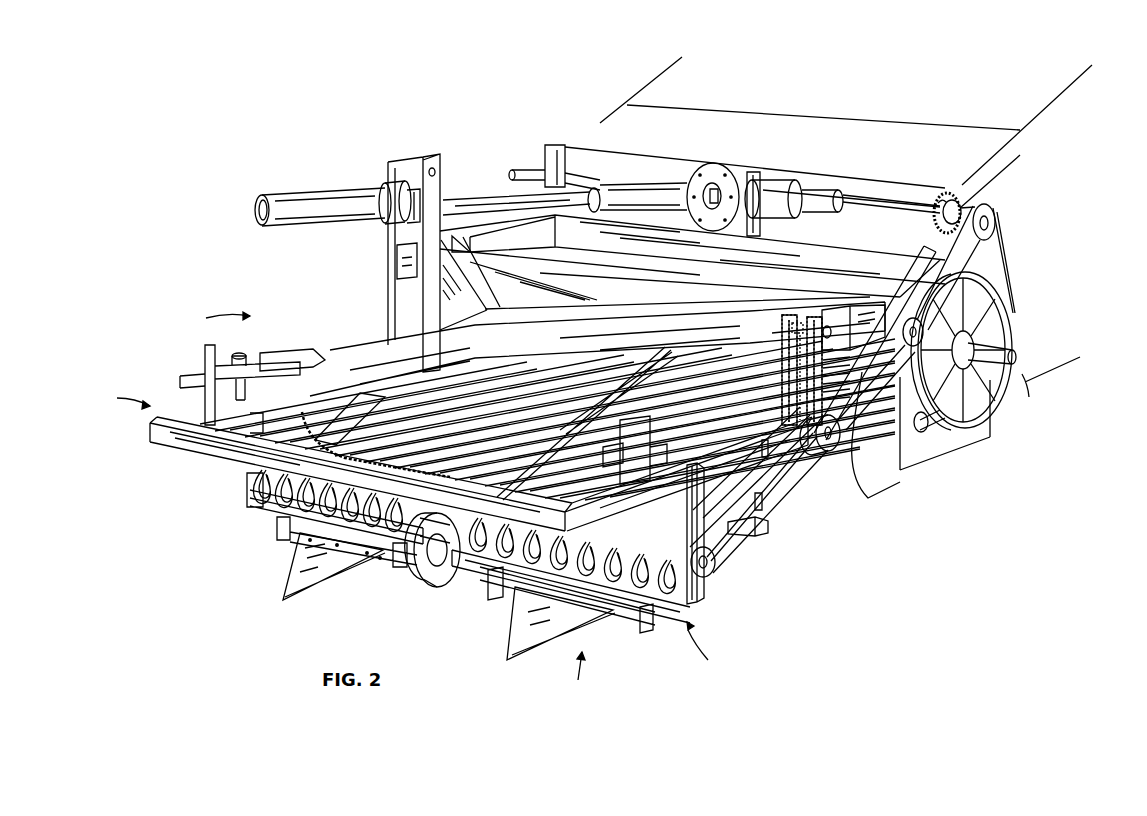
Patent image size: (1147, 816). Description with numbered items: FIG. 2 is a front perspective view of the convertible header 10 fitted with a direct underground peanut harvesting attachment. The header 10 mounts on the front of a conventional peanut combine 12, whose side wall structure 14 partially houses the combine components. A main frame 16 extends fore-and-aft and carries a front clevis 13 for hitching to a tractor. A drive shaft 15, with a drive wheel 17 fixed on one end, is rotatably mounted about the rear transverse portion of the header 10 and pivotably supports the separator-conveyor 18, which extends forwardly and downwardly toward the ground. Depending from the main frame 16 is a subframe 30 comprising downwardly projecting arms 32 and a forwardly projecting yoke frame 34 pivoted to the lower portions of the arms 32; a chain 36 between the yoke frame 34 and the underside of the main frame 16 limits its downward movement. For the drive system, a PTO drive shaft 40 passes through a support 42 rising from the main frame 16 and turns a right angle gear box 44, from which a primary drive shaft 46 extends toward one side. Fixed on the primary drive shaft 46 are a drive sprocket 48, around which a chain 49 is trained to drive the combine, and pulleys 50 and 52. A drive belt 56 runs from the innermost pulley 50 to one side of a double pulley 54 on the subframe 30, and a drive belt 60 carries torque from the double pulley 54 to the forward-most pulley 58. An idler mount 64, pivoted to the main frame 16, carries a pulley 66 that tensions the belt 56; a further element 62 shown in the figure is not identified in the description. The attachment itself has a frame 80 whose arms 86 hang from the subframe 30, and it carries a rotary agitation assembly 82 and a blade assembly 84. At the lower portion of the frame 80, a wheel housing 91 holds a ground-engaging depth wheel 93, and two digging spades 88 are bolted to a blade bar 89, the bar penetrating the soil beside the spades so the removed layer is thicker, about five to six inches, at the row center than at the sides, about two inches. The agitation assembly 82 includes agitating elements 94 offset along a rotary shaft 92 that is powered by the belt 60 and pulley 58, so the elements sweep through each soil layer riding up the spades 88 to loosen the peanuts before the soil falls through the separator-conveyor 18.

The header 10 is at (215, 319).
The peanut combine 12 is at (892, 106).
The front clevis 13 is at (288, 356).
The side wall structure 14 is at (1071, 305).
The drive shaft 15 is at (1016, 356).
The main frame 16 is at (597, 346).
The drive wheel 17 is at (1008, 318).
The separator-conveyor 18 is at (588, 578).
The subframe 30 is at (120, 399).
The arms 32 is at (772, 334).
The yoke frame 34 is at (148, 441).
The chain 36 is at (321, 425).
The PTO drive shaft 40 is at (466, 196).
The support 42 is at (388, 261).
The right angle gear box 44 is at (733, 178).
The primary drive shaft 46 is at (852, 200).
The drive sprocket 48 is at (940, 207).
The chain 49 is at (952, 200).
The pulley 50 is at (985, 204).
The pulley 52 is at (996, 219).
The double pulley 54 is at (822, 452).
The drive belt 56 is at (862, 413).
The pulley 58 is at (718, 565).
The drive belt 60 is at (767, 514).
The belt 62 is at (1004, 278).
The idler mount 64 is at (872, 301).
The pulley 66 is at (906, 346).
The frame 80 is at (590, 615).
The rotary agitation assembly 82 is at (705, 599).
The blade assembly 84 is at (575, 676).
The arms 86 is at (245, 497).
The digging spades 88 is at (287, 570).
The blade bar 89 is at (375, 556).
The wheel housing 91 is at (432, 587).
The rotary shaft 92 is at (420, 506).
The depth wheel 93 is at (412, 573).
The agitating elements 94 is at (403, 458).